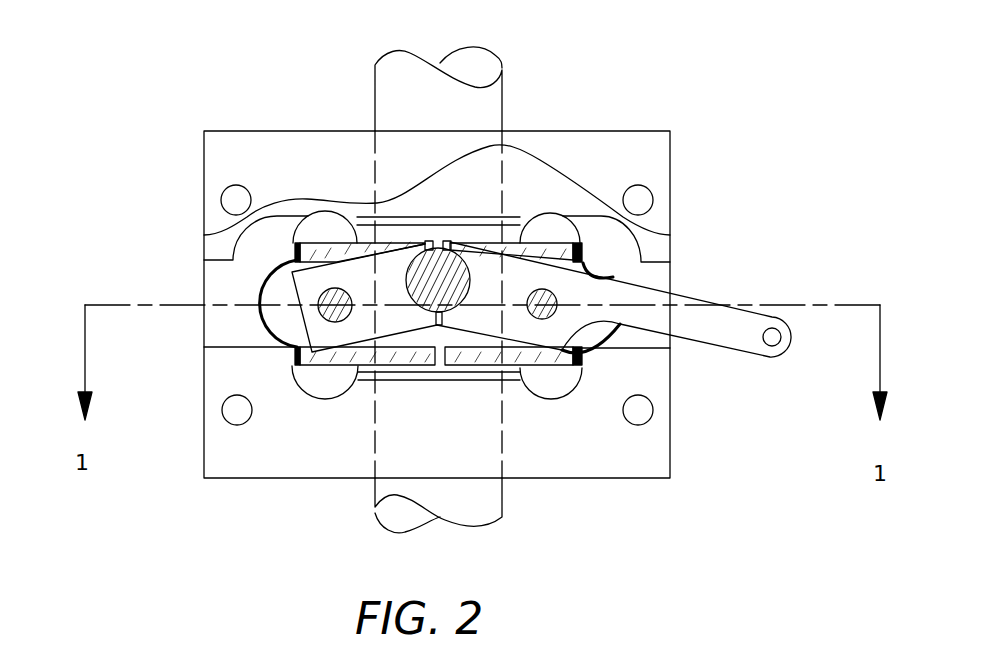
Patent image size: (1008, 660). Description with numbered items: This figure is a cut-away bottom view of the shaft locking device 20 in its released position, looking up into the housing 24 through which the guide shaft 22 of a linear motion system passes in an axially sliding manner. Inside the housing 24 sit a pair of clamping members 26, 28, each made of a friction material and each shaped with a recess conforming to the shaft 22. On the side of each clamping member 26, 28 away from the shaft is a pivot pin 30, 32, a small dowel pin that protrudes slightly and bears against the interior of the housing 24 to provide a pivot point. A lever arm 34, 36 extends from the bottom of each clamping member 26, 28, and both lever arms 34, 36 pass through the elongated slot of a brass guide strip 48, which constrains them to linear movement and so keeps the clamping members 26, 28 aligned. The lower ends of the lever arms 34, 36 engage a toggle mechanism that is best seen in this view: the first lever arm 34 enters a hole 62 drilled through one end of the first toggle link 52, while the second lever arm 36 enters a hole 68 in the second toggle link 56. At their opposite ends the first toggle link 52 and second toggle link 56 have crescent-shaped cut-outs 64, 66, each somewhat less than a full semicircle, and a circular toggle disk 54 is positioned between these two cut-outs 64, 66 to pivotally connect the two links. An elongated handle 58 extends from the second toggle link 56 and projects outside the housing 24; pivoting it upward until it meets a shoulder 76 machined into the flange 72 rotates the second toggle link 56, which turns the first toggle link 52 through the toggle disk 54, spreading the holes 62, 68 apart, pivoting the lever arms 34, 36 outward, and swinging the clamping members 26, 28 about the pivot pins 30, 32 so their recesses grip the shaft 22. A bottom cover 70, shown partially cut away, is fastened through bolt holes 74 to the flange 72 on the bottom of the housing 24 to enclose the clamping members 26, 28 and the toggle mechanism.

The shaft locking device 20 is at (698, 188).
The guide shaft 22 is at (482, 104).
The housing 24 is at (660, 384).
The first clamping member 26 is at (328, 243).
The second clamping member 28 is at (550, 243).
The first pivot pin 30 is at (292, 355).
The second pivot pin 32 is at (583, 352).
The first lever arm 34 is at (323, 297).
The second lever arm 36 is at (548, 290).
The guide strip 48 is at (270, 295).
The first toggle link 52 is at (343, 335).
The toggle disk 54 is at (440, 292).
The second toggle link 56 is at (520, 360).
The elongated handle 58 is at (752, 323).
The hole in first toggle link 62 is at (320, 311).
The crescent-shaped cut-out of first toggle link 64 is at (410, 282).
The crescent-shaped cut-out of second toggle link 66 is at (480, 285).
The hole in second toggle link 68 is at (527, 298).
The bottom cover 70 is at (617, 150).
The flange 72 is at (650, 460).
The bolt holes 74 is at (236, 200).
The shoulder 76 is at (672, 280).